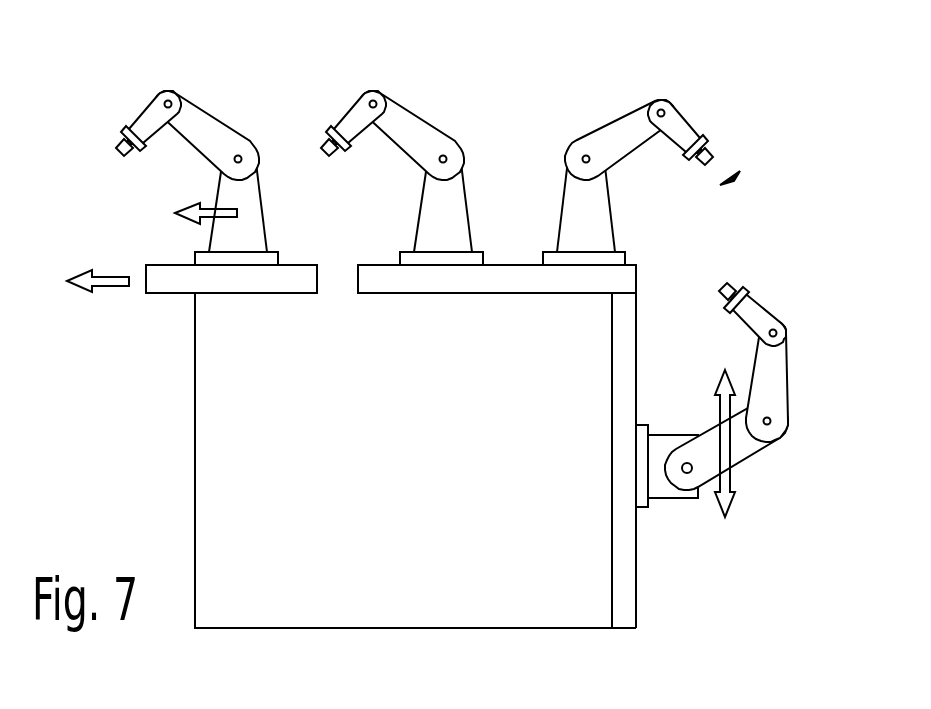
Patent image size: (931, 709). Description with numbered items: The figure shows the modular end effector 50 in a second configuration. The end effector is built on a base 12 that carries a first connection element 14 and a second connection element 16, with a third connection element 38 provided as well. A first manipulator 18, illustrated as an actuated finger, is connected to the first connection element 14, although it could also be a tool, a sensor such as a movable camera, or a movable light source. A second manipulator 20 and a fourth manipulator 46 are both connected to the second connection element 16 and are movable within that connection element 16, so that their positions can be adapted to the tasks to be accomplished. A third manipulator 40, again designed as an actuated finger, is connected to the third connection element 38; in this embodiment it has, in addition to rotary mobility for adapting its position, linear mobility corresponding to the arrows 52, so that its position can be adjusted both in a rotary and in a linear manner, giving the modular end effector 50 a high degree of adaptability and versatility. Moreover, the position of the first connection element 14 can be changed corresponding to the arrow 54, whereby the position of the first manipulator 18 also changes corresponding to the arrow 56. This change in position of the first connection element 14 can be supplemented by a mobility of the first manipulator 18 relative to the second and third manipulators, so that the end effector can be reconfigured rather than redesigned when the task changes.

The base 12 is at (217, 420).
The first connection element 14 is at (223, 280).
The second connection element 16 is at (587, 283).
The first manipulator 18 is at (155, 118).
The second manipulator 20 is at (683, 125).
The third connection element 38 is at (623, 538).
The third manipulator 40 is at (770, 378).
The fourth manipulator 46 is at (420, 135).
The modular end effector 50 is at (736, 175).
The arrows 52 is at (737, 492).
The arrow 54 is at (99, 275).
The arrow 56 is at (188, 210).